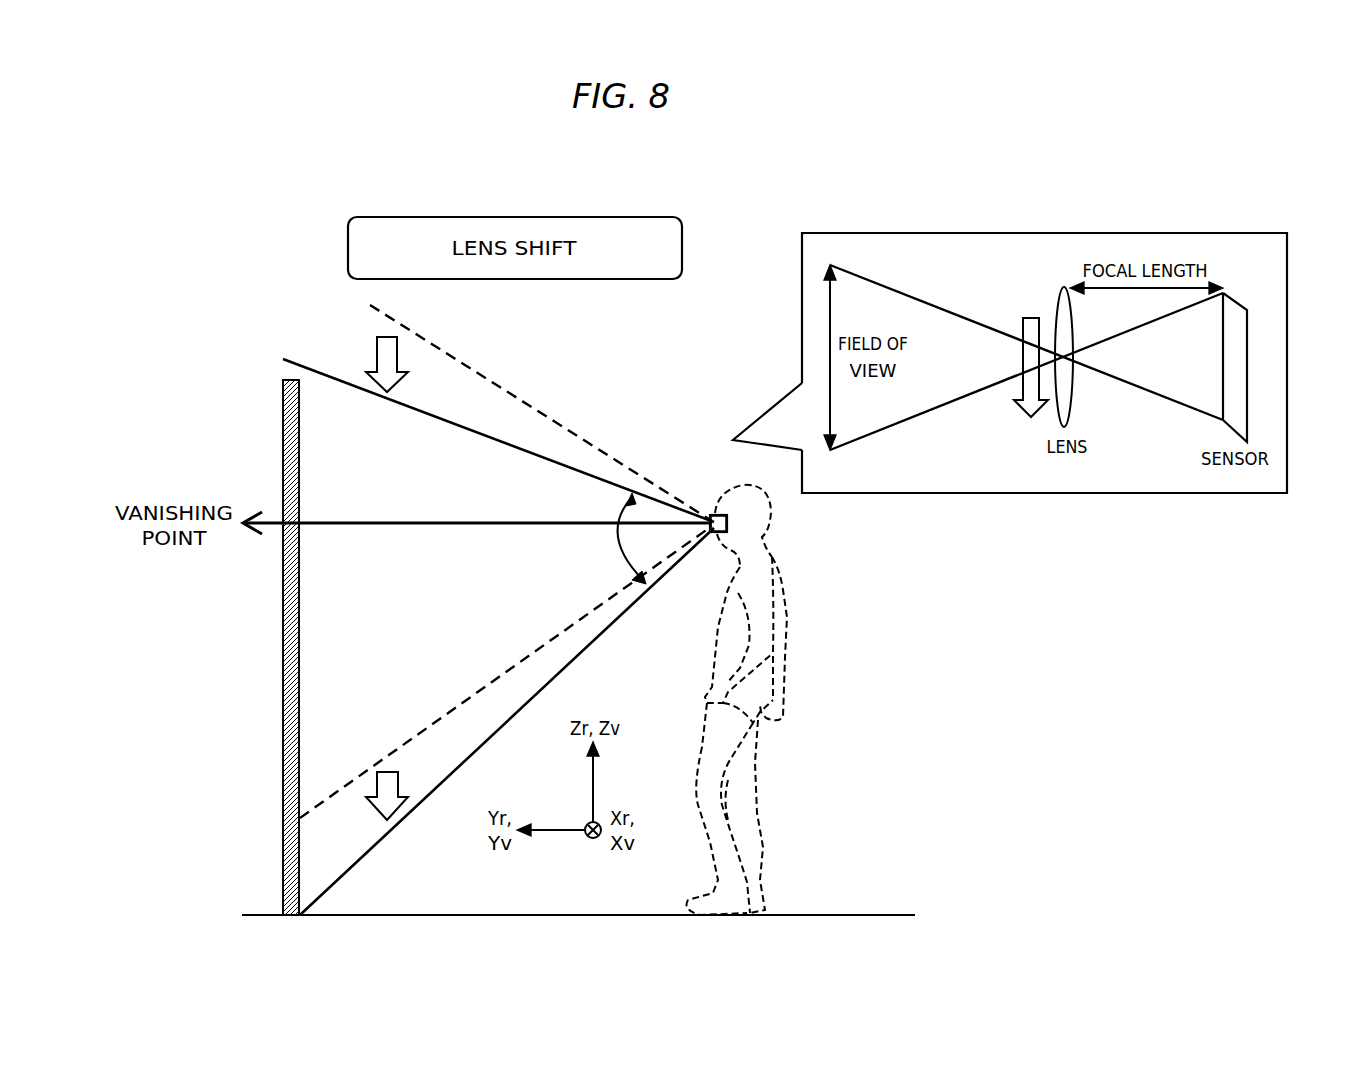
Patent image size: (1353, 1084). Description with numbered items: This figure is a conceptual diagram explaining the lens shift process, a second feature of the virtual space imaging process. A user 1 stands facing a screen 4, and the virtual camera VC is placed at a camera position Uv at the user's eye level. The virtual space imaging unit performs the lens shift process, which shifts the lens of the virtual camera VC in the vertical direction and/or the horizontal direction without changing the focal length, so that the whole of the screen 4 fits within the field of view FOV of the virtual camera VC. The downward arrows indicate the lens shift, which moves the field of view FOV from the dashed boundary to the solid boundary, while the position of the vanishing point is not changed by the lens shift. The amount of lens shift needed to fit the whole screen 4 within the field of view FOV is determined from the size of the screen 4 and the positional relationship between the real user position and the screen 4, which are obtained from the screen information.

The user 1 is at (785, 654).
The screen 4 is at (283, 672).
The virtual camera position Uv is at (735, 525).
The virtual camera VC is at (708, 514).
The field of view FOV is at (606, 538).